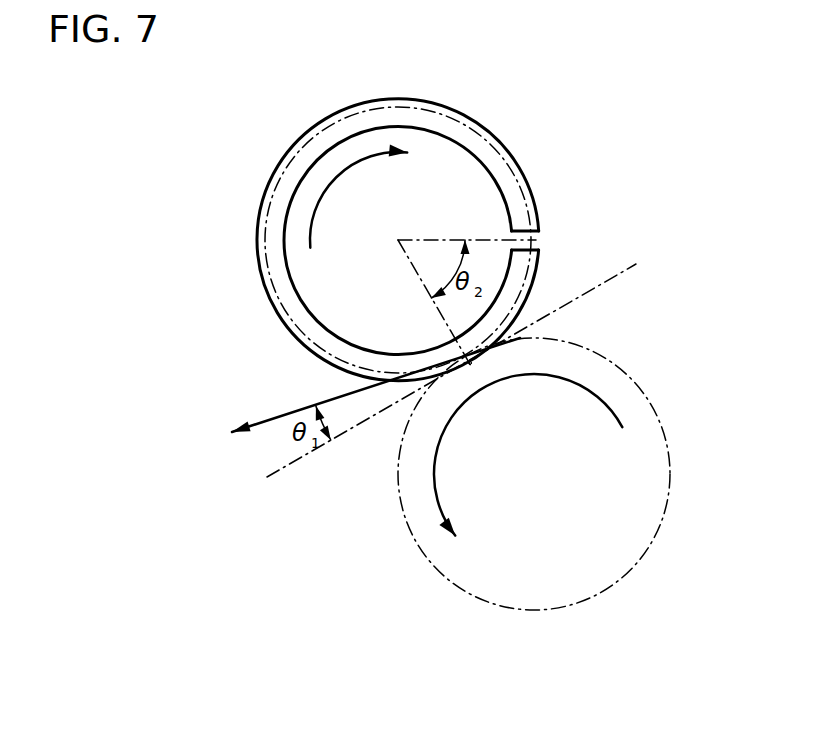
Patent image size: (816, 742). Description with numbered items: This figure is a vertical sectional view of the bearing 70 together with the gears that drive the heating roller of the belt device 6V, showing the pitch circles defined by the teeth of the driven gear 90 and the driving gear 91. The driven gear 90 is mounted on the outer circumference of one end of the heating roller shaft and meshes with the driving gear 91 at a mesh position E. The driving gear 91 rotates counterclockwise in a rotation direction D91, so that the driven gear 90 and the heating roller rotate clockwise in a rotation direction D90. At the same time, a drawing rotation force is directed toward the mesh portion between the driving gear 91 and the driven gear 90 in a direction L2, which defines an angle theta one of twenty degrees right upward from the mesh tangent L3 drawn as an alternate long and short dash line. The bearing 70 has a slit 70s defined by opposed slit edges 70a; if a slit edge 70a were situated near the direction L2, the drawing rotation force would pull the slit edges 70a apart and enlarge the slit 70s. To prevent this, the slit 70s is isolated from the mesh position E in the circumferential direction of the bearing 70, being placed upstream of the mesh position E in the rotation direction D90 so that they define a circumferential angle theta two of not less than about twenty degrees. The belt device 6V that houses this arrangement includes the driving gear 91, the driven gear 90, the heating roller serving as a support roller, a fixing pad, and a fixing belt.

The belt device 6V is at (530, 84).
The bearing 70 is at (258, 247).
The slit 70s is at (536, 231).
The slit edge 70a is at (538, 249).
The driven gear 90 is at (508, 151).
The driving gear 91 is at (661, 427).
The mesh position E is at (472, 364).
The direction of drawing rotation force L2 is at (272, 418).
The mesh tangent L3 is at (590, 290).
The rotation direction of driven gear D90 is at (358, 196).
The rotation direction of driving gear D91 is at (528, 455).